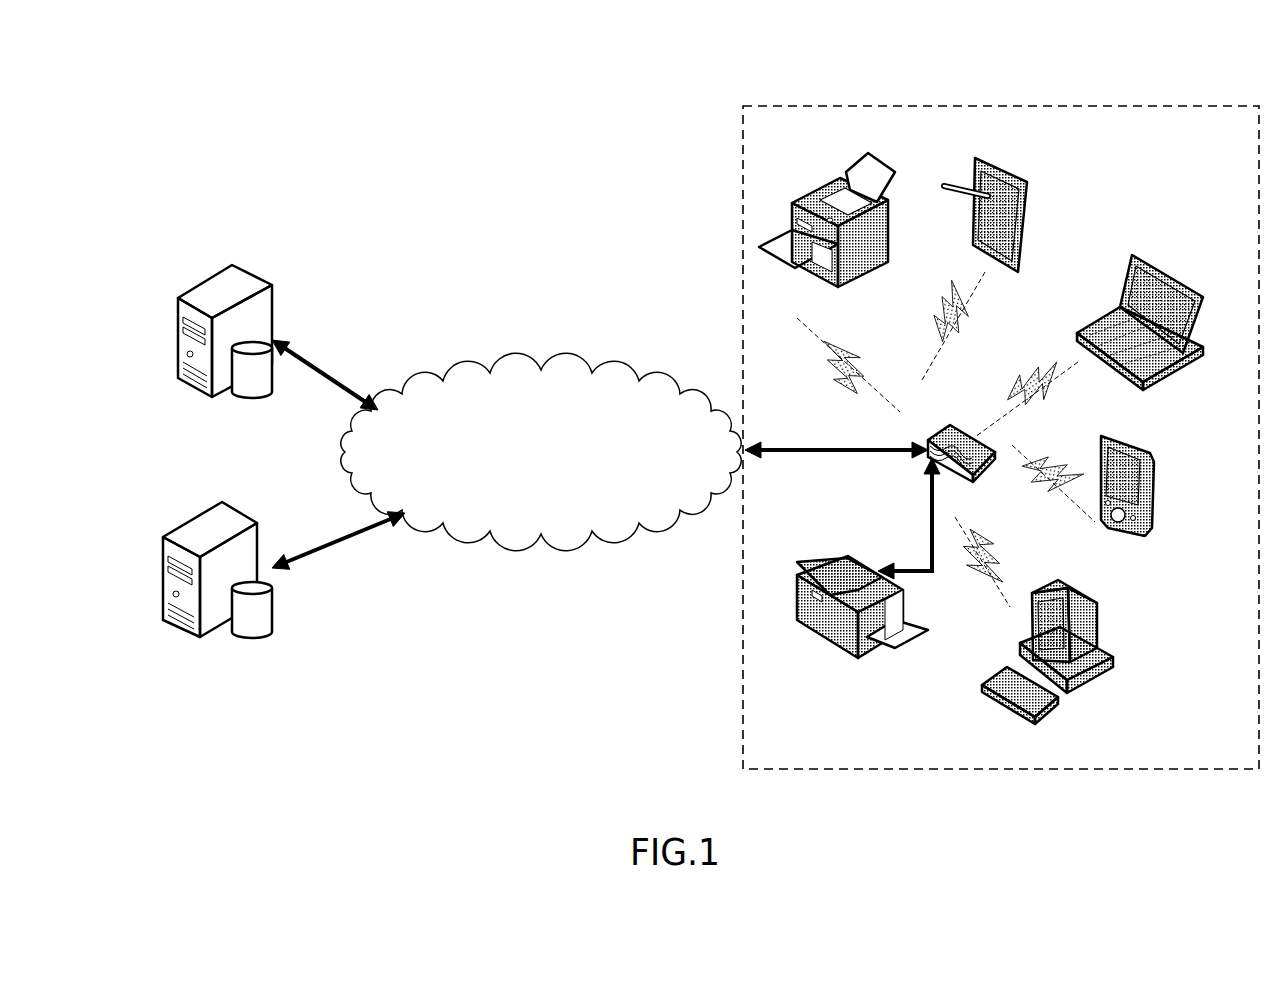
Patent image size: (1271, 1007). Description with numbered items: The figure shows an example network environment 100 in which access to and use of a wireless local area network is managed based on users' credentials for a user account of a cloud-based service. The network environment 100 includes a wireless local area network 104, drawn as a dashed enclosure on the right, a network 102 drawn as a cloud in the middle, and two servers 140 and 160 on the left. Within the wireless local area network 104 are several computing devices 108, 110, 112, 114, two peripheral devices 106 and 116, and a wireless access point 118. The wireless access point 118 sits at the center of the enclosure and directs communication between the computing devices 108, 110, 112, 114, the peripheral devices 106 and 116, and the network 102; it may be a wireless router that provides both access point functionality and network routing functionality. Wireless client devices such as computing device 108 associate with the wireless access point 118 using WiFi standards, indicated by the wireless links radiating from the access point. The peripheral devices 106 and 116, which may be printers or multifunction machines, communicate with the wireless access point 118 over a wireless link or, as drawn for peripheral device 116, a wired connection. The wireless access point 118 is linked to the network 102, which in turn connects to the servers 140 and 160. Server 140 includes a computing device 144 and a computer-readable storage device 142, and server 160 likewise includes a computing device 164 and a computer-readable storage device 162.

The network environment 100 is at (654, 62).
The network 102 is at (541, 436).
The wireless local area network 104 is at (1001, 415).
The peripheral device 106 is at (843, 208).
The computing device 108 is at (1006, 196).
The computing device 110 is at (1153, 300).
The computing device 112 is at (1164, 468).
The computing device 114 is at (1082, 651).
The peripheral device 116 is at (862, 575).
The wireless access point 118 is at (955, 410).
The server 140 is at (245, 347).
The computer-readable storage device 142 is at (276, 392).
The computing device 144 is at (254, 313).
The server 160 is at (255, 587).
The computer-readable storage device 162 is at (289, 625).
The computing device 164 is at (230, 554).